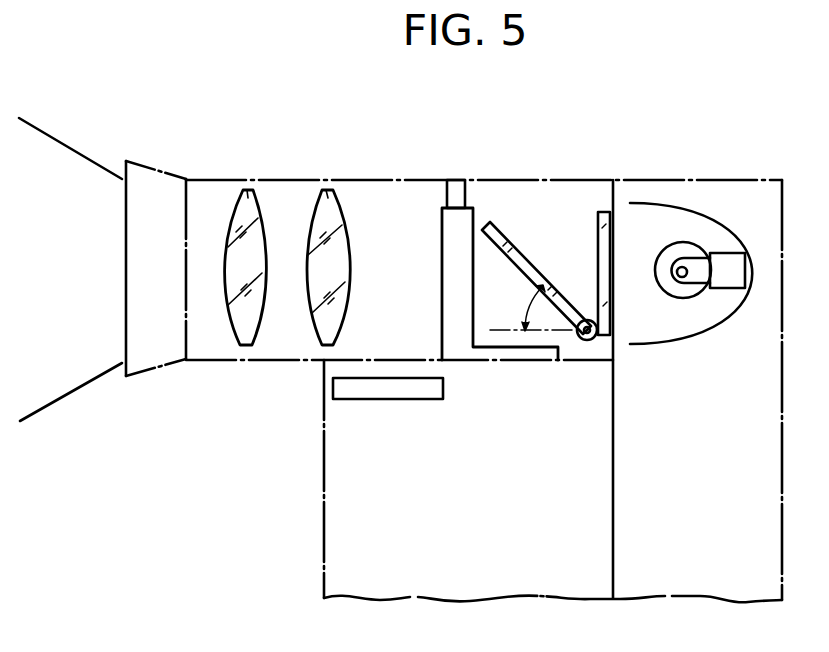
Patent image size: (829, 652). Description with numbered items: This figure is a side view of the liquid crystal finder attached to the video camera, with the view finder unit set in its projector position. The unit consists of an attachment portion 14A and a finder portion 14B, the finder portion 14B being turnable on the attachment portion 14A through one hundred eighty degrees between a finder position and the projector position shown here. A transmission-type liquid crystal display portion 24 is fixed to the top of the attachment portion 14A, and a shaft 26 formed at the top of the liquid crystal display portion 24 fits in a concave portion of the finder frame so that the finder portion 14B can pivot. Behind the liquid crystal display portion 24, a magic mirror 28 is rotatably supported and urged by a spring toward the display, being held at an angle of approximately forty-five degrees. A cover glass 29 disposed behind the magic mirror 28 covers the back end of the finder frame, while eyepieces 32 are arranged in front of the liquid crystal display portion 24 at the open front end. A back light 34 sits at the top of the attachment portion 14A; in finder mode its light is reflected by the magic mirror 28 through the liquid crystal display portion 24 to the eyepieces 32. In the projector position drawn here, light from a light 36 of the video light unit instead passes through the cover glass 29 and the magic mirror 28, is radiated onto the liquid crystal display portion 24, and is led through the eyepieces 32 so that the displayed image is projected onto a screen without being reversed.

The attachment portion 14A is at (323, 502).
The finder portion 14B is at (372, 178).
The transmission-type liquid crystal display portion 24 is at (448, 235).
The shaft 26 is at (457, 184).
The magic mirror 28 is at (518, 257).
The cover glass 29 is at (615, 217).
The eyepieces 32 is at (318, 190).
The back light 34 is at (403, 400).
The light 36 is at (682, 253).